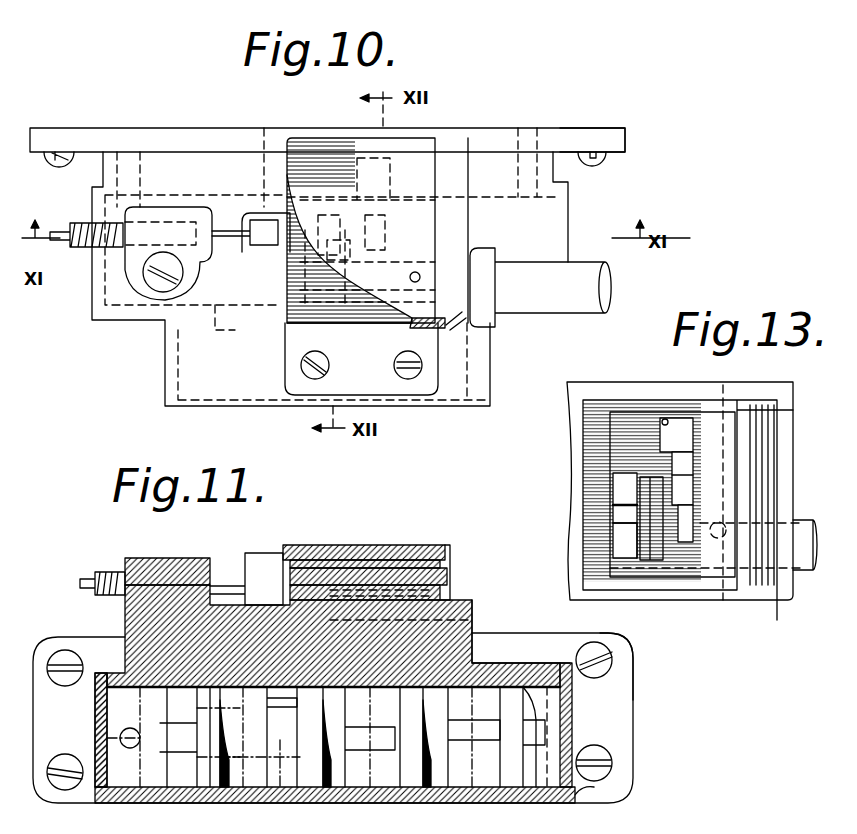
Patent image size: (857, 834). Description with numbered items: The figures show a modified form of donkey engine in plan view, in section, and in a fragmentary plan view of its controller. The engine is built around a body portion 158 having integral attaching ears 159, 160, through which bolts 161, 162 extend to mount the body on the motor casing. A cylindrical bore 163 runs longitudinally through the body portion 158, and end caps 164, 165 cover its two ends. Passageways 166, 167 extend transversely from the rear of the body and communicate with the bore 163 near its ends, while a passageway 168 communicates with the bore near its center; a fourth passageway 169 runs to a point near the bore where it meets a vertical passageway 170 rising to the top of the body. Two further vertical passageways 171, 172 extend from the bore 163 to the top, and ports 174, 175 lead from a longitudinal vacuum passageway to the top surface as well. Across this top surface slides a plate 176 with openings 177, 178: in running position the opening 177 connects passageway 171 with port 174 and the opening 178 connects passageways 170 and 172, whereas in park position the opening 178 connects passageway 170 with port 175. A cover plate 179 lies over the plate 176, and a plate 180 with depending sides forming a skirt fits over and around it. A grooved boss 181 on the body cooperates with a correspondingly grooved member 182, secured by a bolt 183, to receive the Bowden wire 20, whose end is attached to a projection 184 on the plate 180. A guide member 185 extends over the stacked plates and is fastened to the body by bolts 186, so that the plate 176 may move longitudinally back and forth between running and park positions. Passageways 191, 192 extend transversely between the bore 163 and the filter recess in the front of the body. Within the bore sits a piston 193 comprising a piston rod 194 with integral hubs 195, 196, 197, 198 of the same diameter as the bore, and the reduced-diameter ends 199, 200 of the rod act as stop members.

In FIG. 10, the Bowden wire 20 is at (80, 226).
In FIG. 11, the Bowden wire 20 is at (100, 570).
In FIG. 10, the body portion 158 is at (558, 183).
In FIG. 11, the body portion 158 is at (485, 615).
In FIG. 10, the attaching ear 159 is at (74, 128).
In FIG. 11, the attaching ear 159 is at (63, 637).
In FIG. 10, the attaching ear 160 is at (598, 128).
In FIG. 11, the attaching ear 160 is at (626, 656).
In FIG. 10, the bolt 161 is at (62, 166).
In FIG. 11, the bolt 161 is at (58, 678).
In FIG. 10, the bolt 162 is at (604, 160).
In FIG. 11, the bolt 162 is at (596, 745).
In FIG. 11, the cylindrical bore 163 is at (351, 755).
In FIG. 11, the end cap 164 is at (95, 790).
In FIG. 11, the end cap 165 is at (580, 790).
In FIG. 10, the passageway 166 is at (140, 136).
In FIG. 11, the passageway 166 is at (120, 737).
In FIG. 10, the passageway 167 is at (522, 135).
In FIG. 11, the passageway 167 is at (553, 755).
In FIG. 10, the passageway 168 is at (270, 132).
In FIG. 11, the passageway 168 is at (260, 755).
In FIG. 10, the fourth passageway 169 is at (368, 132).
In FIG. 13, the vertical passageway 170 is at (683, 420).
In FIG. 13, the vertical passageway 171 is at (615, 488).
In FIG. 11, the vertical passageway 171 is at (442, 592).
In FIG. 13, the vertical passageway 172 is at (684, 507).
In FIG. 11, the vertical passageway 172 is at (465, 615).
In FIG. 10, the port 174 is at (320, 280).
In FIG. 13, the port 174 is at (613, 548).
In FIG. 10, the port 175 is at (415, 270).
In FIG. 13, the port 175 is at (724, 560).
In FIG. 13, the plate 176 is at (586, 428).
In FIG. 11, the plate 176 is at (448, 570).
In FIG. 13, the opening 177 is at (615, 515).
In FIG. 13, the opening 178 is at (664, 419).
In FIG. 11, the cover plate 179 is at (300, 545).
In FIG. 11, the plate 180 is at (440, 545).
In FIG. 11, the grooved boss 181 is at (126, 614).
In FIG. 10, the grooved member 182 is at (133, 278).
In FIG. 11, the grooved member 182 is at (180, 556).
In FIG. 10, the bolt 183 is at (160, 285).
In FIG. 10, the projection 184 is at (254, 218).
In FIG. 11, the projection 184 is at (270, 555).
In FIG. 11, the guide member 185 is at (362, 545).
In FIG. 10, the bolt 186 is at (361, 359).
In FIG. 10, the passageway 191 is at (215, 332).
In FIG. 10, the passageway 192 is at (480, 325).
In FIG. 11, the piston 193 is at (478, 760).
In FIG. 11, the piston rod 194 is at (432, 755).
In FIG. 11, the hub 195 is at (215, 785).
In FIG. 11, the hub 196 is at (312, 790).
In FIG. 11, the hub 197 is at (385, 790).
In FIG. 11, the hub 198 is at (510, 790).
In FIG. 11, the end of piston rod 199 is at (178, 755).
In FIG. 11, the end of piston rod 200 is at (540, 687).